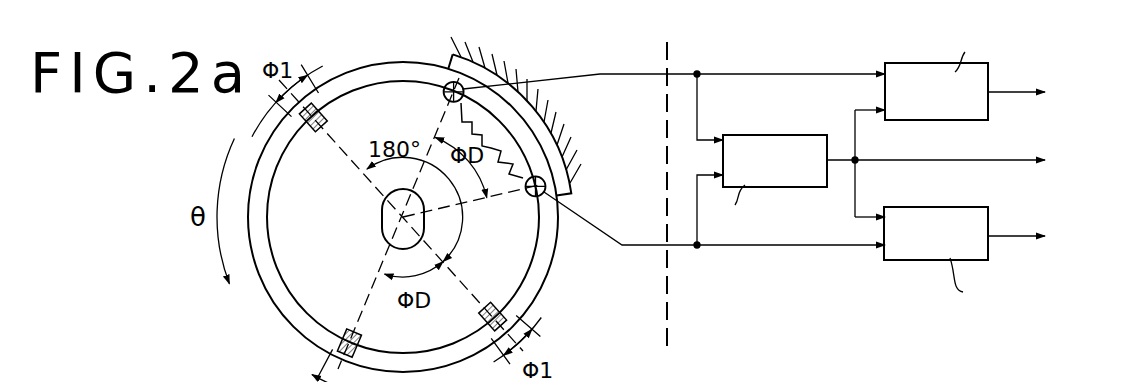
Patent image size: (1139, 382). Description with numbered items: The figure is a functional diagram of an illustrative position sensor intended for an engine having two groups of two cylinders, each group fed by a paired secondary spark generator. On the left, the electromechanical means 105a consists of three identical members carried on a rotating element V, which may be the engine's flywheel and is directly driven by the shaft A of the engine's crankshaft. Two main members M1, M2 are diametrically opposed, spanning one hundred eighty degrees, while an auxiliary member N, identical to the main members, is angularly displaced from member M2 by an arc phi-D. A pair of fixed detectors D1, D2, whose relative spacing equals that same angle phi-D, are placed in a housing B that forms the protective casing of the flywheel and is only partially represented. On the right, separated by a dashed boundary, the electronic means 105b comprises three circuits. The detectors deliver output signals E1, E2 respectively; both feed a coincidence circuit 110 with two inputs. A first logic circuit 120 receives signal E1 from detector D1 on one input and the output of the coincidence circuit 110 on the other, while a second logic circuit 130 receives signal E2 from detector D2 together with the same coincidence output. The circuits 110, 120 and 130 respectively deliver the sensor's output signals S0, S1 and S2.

The rotating element V is at (535, 300).
The shaft A is at (382, 216).
The main member M1 is at (331, 97).
The main member M2 is at (485, 334).
The auxiliary member N is at (357, 352).
The housing B is at (566, 113).
The fixed detector D1 is at (480, 62).
The fixed detector D2 is at (562, 184).
The output signal E1 is at (674, 95).
The output signal E2 is at (714, 213).
The electromechanical means 105a is at (655, 345).
The electronic means 105b is at (878, 345).
The coincidence circuit 110 is at (745, 137).
The first logic circuit 120 is at (903, 64).
The second logic circuit 130 is at (912, 208).
The output signal S0 is at (1066, 163).
The output signal S1 is at (1035, 94).
The output signal S2 is at (1035, 238).